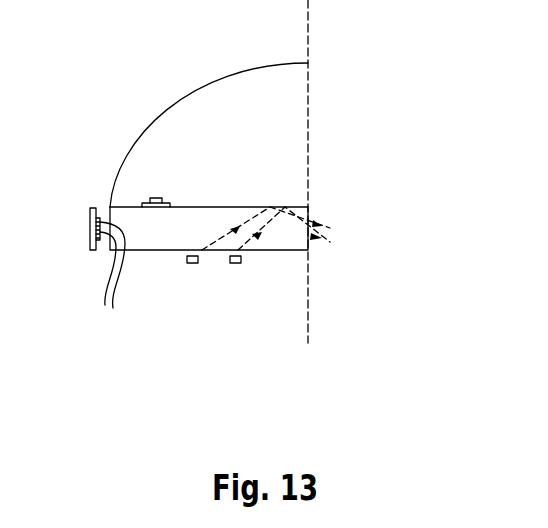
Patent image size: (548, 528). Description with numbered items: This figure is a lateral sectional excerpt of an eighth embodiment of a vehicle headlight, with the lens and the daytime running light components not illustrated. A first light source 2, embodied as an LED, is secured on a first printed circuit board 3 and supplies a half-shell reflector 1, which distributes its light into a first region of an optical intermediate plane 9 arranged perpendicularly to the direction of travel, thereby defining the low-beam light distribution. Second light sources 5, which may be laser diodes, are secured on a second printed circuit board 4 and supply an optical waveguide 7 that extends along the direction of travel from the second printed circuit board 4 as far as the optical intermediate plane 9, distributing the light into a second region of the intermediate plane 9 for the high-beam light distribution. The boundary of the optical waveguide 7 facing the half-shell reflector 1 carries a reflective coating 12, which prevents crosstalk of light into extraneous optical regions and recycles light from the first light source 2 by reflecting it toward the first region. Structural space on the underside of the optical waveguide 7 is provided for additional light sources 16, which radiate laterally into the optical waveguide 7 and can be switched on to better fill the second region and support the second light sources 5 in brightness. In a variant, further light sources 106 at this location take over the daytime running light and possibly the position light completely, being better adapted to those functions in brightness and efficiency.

The half-shell reflector 1 is at (248, 70).
The first light source 2 is at (160, 198).
The first printed circuit board 3 is at (147, 203).
The second printed circuit board 4 is at (90, 222).
The second light source 5 is at (112, 280).
The optical waveguide 7 is at (175, 238).
The optical intermediate plane 9 is at (308, 307).
The reflective coating 12 is at (229, 207).
The additional light source 16 is at (202, 318).
The further light source 106 is at (193, 263).